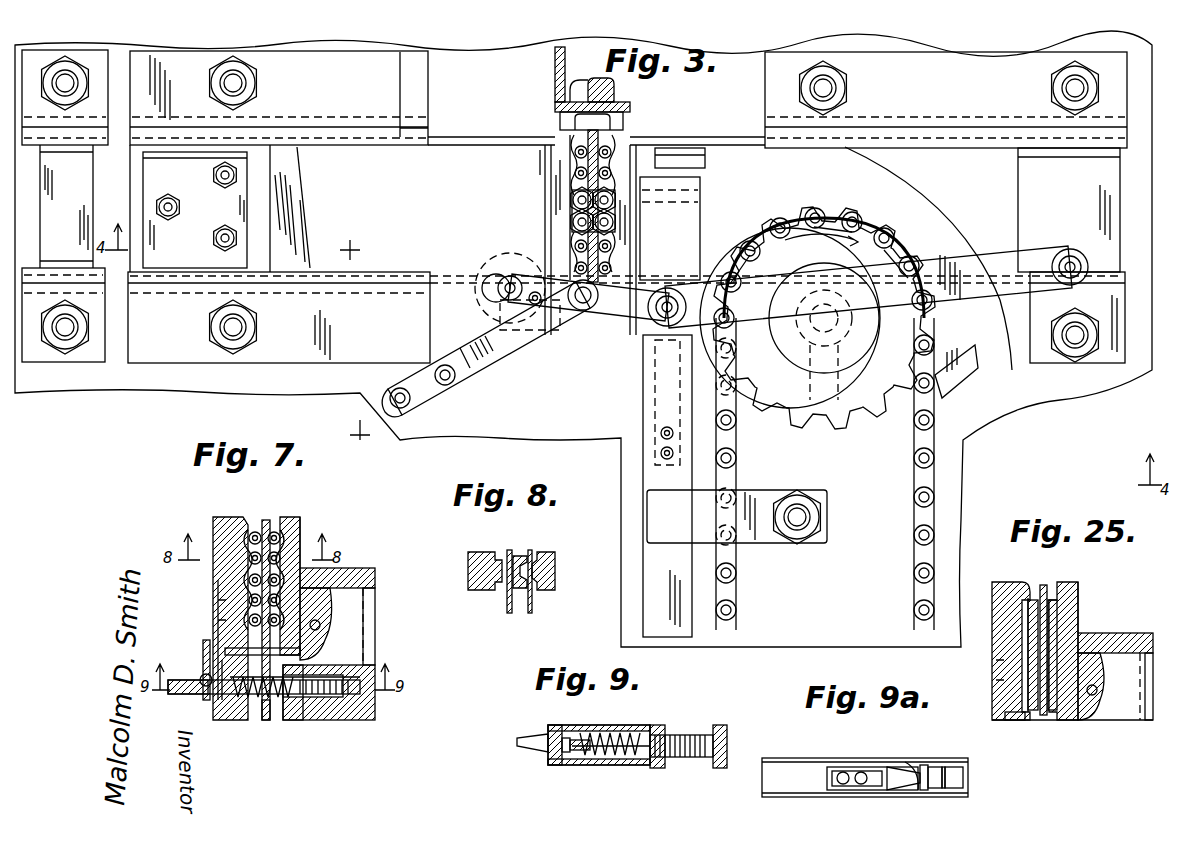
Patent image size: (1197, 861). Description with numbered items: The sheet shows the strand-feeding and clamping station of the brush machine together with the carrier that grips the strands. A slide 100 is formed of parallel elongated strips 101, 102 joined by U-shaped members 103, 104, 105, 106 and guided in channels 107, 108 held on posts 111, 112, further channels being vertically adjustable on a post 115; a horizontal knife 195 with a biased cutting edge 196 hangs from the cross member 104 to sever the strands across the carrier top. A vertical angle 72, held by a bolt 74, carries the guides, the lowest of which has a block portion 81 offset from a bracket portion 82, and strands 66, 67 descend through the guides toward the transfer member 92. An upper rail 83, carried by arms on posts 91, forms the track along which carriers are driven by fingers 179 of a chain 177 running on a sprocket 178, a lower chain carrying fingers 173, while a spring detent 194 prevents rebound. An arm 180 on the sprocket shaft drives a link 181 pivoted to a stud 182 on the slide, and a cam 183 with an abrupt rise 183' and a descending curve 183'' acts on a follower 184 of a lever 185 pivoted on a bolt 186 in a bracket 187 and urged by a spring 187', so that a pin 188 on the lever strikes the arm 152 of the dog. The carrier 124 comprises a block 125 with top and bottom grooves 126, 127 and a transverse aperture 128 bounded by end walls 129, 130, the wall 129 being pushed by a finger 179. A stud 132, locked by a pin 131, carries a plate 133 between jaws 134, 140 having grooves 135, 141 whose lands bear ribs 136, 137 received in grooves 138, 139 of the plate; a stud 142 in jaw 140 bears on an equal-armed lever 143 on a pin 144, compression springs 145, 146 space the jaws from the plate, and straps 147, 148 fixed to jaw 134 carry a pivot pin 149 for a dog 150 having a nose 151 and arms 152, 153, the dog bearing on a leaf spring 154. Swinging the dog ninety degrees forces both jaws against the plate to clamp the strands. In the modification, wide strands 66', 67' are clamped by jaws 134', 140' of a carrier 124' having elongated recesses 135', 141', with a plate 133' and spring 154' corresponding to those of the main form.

In FIG. 3, the vertical angle 72 is at (555, 60).
In FIG. 3, the bolt 74 is at (614, 92).
In FIG. 3, the bracket portion 82 is at (615, 122).
In FIG. 3, the strand 66 is at (625, 204).
In FIG. 7, the strand 66 is at (271, 603).
In FIG. 8, the strand 66 is at (556, 594).
In FIG. 3, the strand 67 is at (533, 207).
In FIG. 7, the strand 67 is at (252, 557).
In FIG. 8, the strand 67 is at (490, 591).
In FIG. 3, the block portion 81 is at (572, 207).
In FIG. 3, the carrier 124 is at (511, 181).
In FIG. 7, the carrier 124 is at (162, 581).
In FIG. 3, the arm of dog 153 is at (545, 268).
In FIG. 7, the arm of dog 153 is at (203, 655).
In FIG. 9A, the arm of dog 153 is at (905, 784).
In FIG. 3, the strip 102 is at (442, 274).
In FIG. 3, the slide 100 is at (477, 123).
In FIG. 3, the channel 107 is at (420, 128).
In FIG. 3, the strip 101 is at (495, 135).
In FIG. 3, the post 111 is at (262, 83).
In FIG. 3, the U-shaped member 103 is at (80, 168).
In FIG. 3, the U-shaped member 104 is at (152, 195).
In FIG. 3, the knife 195 is at (285, 160).
In FIG. 3, the cutting edge 196 is at (306, 220).
In FIG. 3, the channel 108 is at (398, 280).
In FIG. 3, the post 112 is at (66, 335).
In FIG. 3, the U-shaped member 105 is at (705, 160).
In FIG. 3, the transfer member 92 is at (690, 205).
In FIG. 3, the end wall 129 is at (664, 221).
In FIG. 7, the end wall 129 is at (365, 597).
In FIG. 25, the end wall 129 is at (1122, 655).
In FIG. 3, the finger 179 is at (750, 235).
In FIG. 3, the sprocket 178 is at (850, 240).
In FIG. 3, the U-shaped member 106 is at (1020, 185).
In FIG. 3, the link 181 is at (1020, 260).
In FIG. 3, the stud 182 is at (1080, 224).
In FIG. 3, the finger 173 is at (950, 350).
In FIG. 3, the chain 177 is at (936, 420).
In FIG. 3, the post 115 is at (1075, 345).
In FIG. 3, the pin 188 is at (497, 289).
In FIG. 3, the arm of dog 152 is at (490, 300).
In FIG. 7, the arm of dog 152 is at (200, 680).
In FIG. 9, the arm of dog 152 is at (530, 740).
In FIG. 9A, the arm of dog 152 is at (915, 765).
In FIG. 3, the bracket 187 is at (486, 349).
In FIG. 3, the spring 187' is at (523, 363).
In FIG. 3, the bolt 186 is at (586, 312).
In FIG. 3, the strap 147 is at (604, 312).
In FIG. 9, the strap 147 is at (632, 718).
In FIG. 9A, the strap 147 is at (930, 765).
In FIG. 3, the lever 185 is at (652, 325).
In FIG. 3, the spring detent 194 is at (665, 396).
In FIG. 3, the upper rail 83 is at (648, 418).
In FIG. 3, the cam 183 is at (751, 474).
In FIG. 3, the abrupt rise 183' is at (669, 355).
In FIG. 3, the descending curve 183'' is at (784, 461).
In FIG. 3, the arm 180 is at (778, 330).
In FIG. 3, the follower 184 is at (633, 297).
In FIG. 3, the post 91 is at (800, 525).
In FIG. 7, the jaw member 140 is at (200, 607).
In FIG. 8, the jaw member 140 is at (472, 564).
In FIG. 9A, the jaw member 140 is at (865, 769).
In FIG. 7, the grooves 141 is at (187, 606).
In FIG. 7, the jaw 134 is at (302, 570).
In FIG. 8, the jaw 134 is at (564, 574).
In FIG. 7, the grooves 135 is at (331, 535).
In FIG. 8, the grooves 135 is at (564, 543).
In FIG. 7, the block 125 is at (350, 568).
In FIG. 9, the block 125 is at (727, 740).
In FIG. 25, the block 125 is at (1115, 633).
In FIG. 7, the aperture 128 is at (375, 623).
In FIG. 7, the end wall 130 is at (368, 660).
In FIG. 7, the lever 143 is at (328, 615).
In FIG. 25, the lever 143 is at (1104, 678).
In FIG. 7, the pin 144 is at (325, 632).
In FIG. 7, the pin 131 is at (340, 720).
In FIG. 9, the pin 131 is at (680, 760).
In FIG. 7, the stud 132 is at (300, 720).
In FIG. 9, the stud 132 is at (650, 768).
In FIG. 7, the compression spring 145 is at (276, 700).
In FIG. 9, the compression spring 145 is at (652, 730).
In FIG. 7, the compression spring 146 is at (250, 700).
In FIG. 9, the compression spring 146 is at (595, 730).
In FIG. 7, the plate 133 is at (246, 745).
In FIG. 8, the plate 133 is at (494, 585).
In FIG. 9, the plate 133 is at (632, 791).
In FIG. 7, the stud 142 is at (240, 650).
In FIG. 7, the leaf spring 154 is at (185, 663).
In FIG. 9A, the leaf spring 154 is at (867, 791).
In FIG. 7, the dog 150 is at (200, 692).
In FIG. 9, the dog 150 is at (550, 760).
In FIG. 9A, the dog 150 is at (935, 777).
In FIG. 7, the nose 151 is at (205, 700).
In FIG. 7, the pivot pin 149 is at (195, 705).
In FIG. 8, the rib 136 is at (555, 565).
In FIG. 8, the rib 137 is at (545, 590).
In FIG. 8, the groove 138 is at (522, 555).
In FIG. 8, the groove 139 is at (528, 612).
In FIG. 9, the strap 148 is at (605, 765).
In FIG. 9A, the strap 148 is at (930, 790).
In FIG. 9, the top groove 126 is at (690, 730).
In FIG. 9, the bottom groove 127 is at (690, 758).
In FIG. 25, the jaw 140' is at (994, 651).
In FIG. 25, the wide strand 67' is at (1006, 635).
In FIG. 25, the plate 133' is at (1066, 636).
In FIG. 25, the wide strand 66' is at (1079, 650).
In FIG. 25, the jaw 134' is at (1103, 641).
In FIG. 25, the elongated recess 135' is at (1120, 607).
In FIG. 25, the carrier 124' is at (967, 649).
In FIG. 25, the elongated recess 141' is at (978, 670).
In FIG. 25, the plate 154' is at (986, 708).